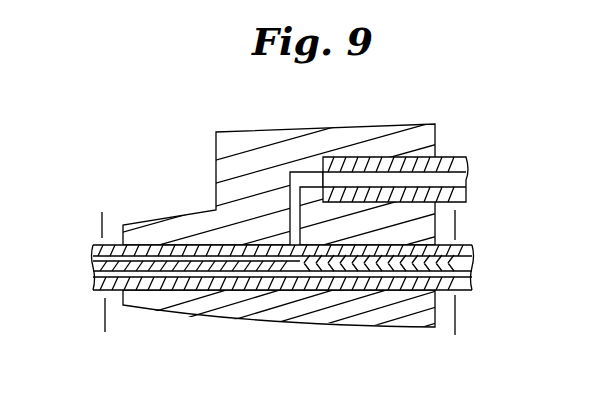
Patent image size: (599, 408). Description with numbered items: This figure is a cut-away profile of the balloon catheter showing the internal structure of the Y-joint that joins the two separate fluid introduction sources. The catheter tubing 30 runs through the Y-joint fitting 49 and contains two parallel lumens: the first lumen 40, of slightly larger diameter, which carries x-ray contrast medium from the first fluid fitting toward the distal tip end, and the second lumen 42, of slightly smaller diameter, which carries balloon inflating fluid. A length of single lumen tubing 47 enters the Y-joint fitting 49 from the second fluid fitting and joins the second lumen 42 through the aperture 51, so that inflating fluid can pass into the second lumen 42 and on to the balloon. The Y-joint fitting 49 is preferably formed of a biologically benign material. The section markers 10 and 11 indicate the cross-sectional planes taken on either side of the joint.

The section line 10- 10 is at (88, 312).
The section line 11- 11 is at (532, 314).
The tubing 30 is at (283, 277).
The first lumen 40 is at (377, 272).
The second lumen 42 is at (148, 256).
The single lumen tubing 47 is at (453, 157).
The Y-joint fitting 49 is at (370, 124).
The aperture 51 is at (290, 200).